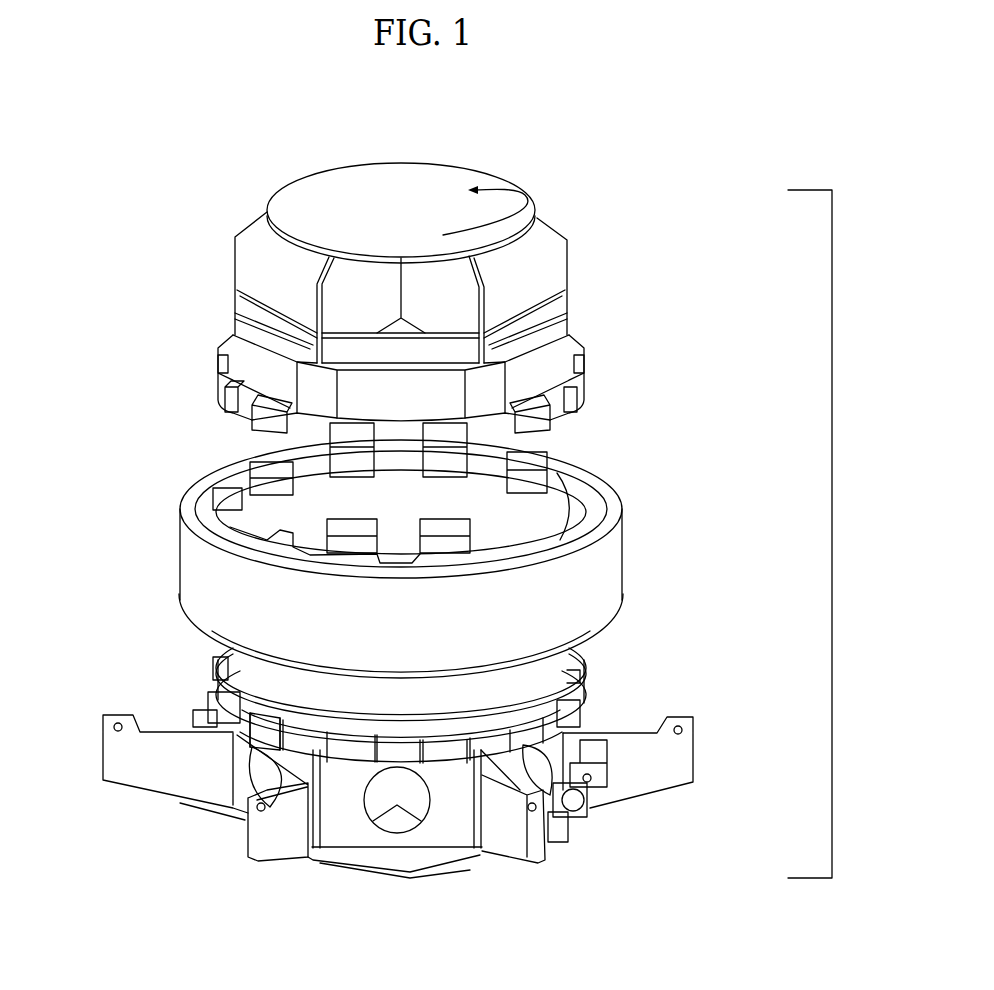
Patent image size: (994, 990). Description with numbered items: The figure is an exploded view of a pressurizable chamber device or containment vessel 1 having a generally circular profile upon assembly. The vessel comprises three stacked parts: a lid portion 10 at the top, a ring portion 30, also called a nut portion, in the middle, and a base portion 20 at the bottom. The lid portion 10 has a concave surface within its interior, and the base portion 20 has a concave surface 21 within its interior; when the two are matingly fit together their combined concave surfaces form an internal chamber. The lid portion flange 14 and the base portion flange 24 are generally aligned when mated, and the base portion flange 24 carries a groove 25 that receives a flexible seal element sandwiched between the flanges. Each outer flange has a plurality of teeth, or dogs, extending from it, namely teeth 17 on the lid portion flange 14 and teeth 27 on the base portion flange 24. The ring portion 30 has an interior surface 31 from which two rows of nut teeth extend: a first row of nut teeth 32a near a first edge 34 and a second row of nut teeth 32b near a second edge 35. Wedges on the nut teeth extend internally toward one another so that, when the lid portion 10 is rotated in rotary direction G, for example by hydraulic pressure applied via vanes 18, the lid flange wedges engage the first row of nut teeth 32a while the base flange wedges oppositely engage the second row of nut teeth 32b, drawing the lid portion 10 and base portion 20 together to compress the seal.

The containment vessel 1 is at (832, 533).
The lid portion 10 is at (411, 242).
The lid portion flange 14 is at (411, 389).
The teeth 17 is at (222, 393).
The vanes 18 is at (278, 272).
The base portion 20 is at (455, 812).
The concave surface 21 is at (425, 706).
The base portion flange 24 is at (596, 678).
The groove 25 is at (340, 732).
The teeth 27 is at (267, 731).
The ring portion 30 is at (401, 557).
The interior surface 31 is at (268, 508).
The first row of nut teeth 32a is at (573, 458).
The second row of nut teeth 32b is at (350, 540).
The first edge 34 is at (200, 507).
The second edge 35 is at (197, 628).